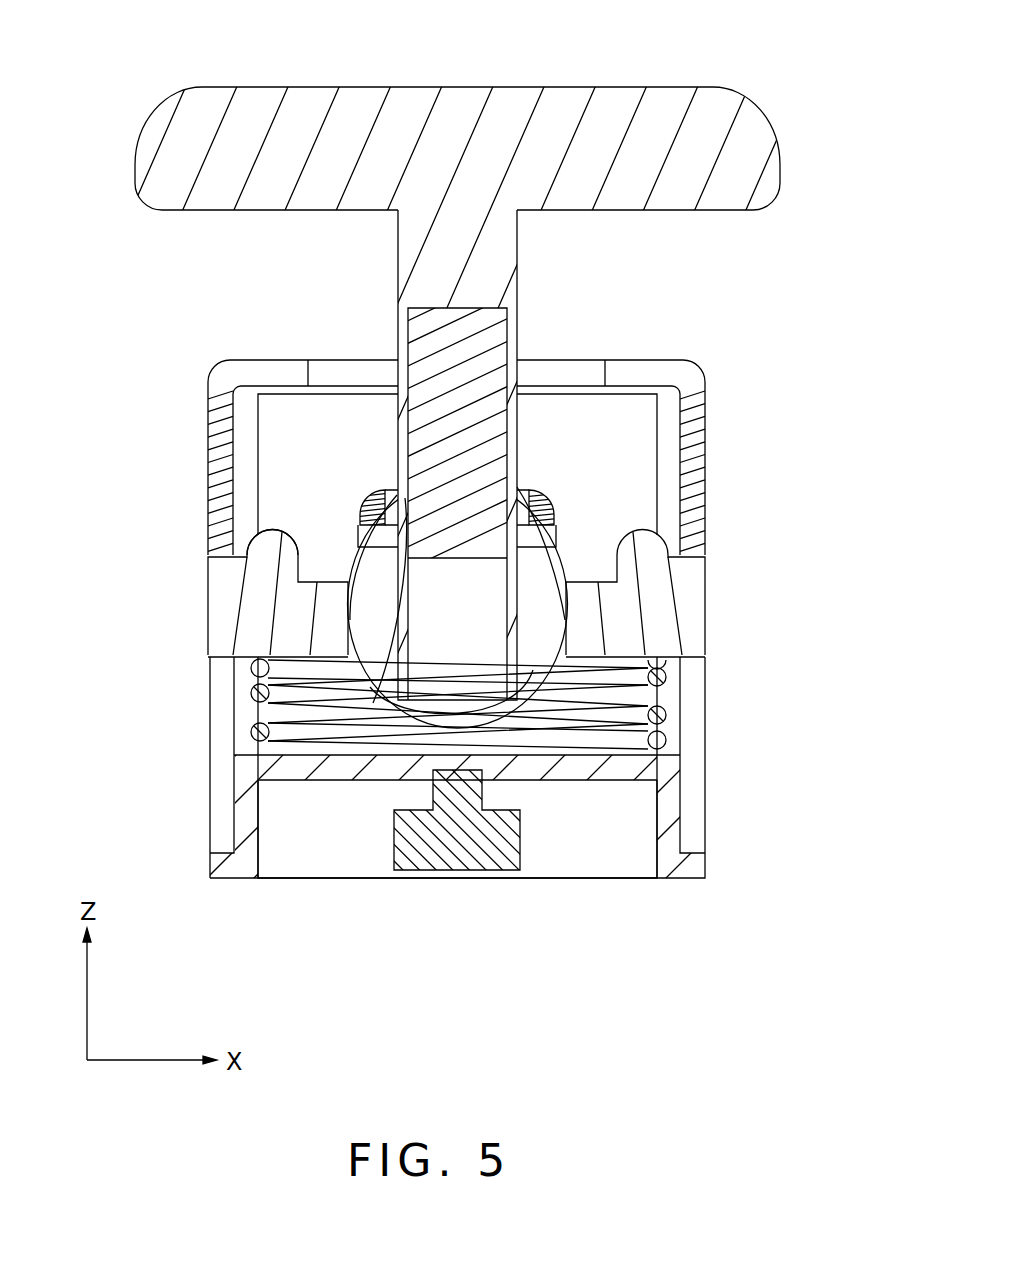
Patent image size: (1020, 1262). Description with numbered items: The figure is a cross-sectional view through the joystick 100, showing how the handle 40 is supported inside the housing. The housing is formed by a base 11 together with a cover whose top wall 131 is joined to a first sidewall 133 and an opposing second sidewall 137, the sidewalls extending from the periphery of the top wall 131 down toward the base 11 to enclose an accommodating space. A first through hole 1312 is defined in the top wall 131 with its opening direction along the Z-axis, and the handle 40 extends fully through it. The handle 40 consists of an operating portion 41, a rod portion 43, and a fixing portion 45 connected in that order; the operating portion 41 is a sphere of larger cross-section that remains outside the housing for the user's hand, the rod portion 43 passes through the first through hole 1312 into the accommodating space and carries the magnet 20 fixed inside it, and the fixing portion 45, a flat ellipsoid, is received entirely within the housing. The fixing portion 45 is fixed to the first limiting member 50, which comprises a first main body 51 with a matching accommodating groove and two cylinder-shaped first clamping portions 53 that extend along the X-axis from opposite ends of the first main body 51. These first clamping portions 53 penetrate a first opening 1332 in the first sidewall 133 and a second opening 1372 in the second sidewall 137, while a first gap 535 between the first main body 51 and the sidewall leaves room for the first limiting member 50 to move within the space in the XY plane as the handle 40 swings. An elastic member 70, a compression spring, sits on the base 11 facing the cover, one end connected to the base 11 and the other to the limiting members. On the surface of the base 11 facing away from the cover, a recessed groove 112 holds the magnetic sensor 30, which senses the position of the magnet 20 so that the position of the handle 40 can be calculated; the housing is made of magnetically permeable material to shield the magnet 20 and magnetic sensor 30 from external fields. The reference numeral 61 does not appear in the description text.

The joystick 100 is at (249, 36).
The magnet 20 is at (440, 342).
The first through hole 1312 is at (352, 368).
The top wall 131 is at (268, 372).
The support block 61 is at (365, 508).
The second sidewall 137 is at (222, 495).
The first gap 535 is at (237, 547).
The second opening 1372 is at (222, 700).
The operating portion 41 is at (650, 173).
The rod portion 43 is at (493, 270).
The handle 40 is at (782, 243).
The fixing portion 45 is at (532, 587).
The first sidewall 133 is at (695, 485).
The first clamping portion 53 is at (687, 572).
The first limiting member 50 is at (792, 540).
The first main body 51 is at (615, 622).
The elastic member 70 is at (615, 712).
The first opening 1332 is at (698, 752).
The base 11 is at (672, 805).
The groove 112 is at (617, 863).
The magnetic sensor 30 is at (465, 850).